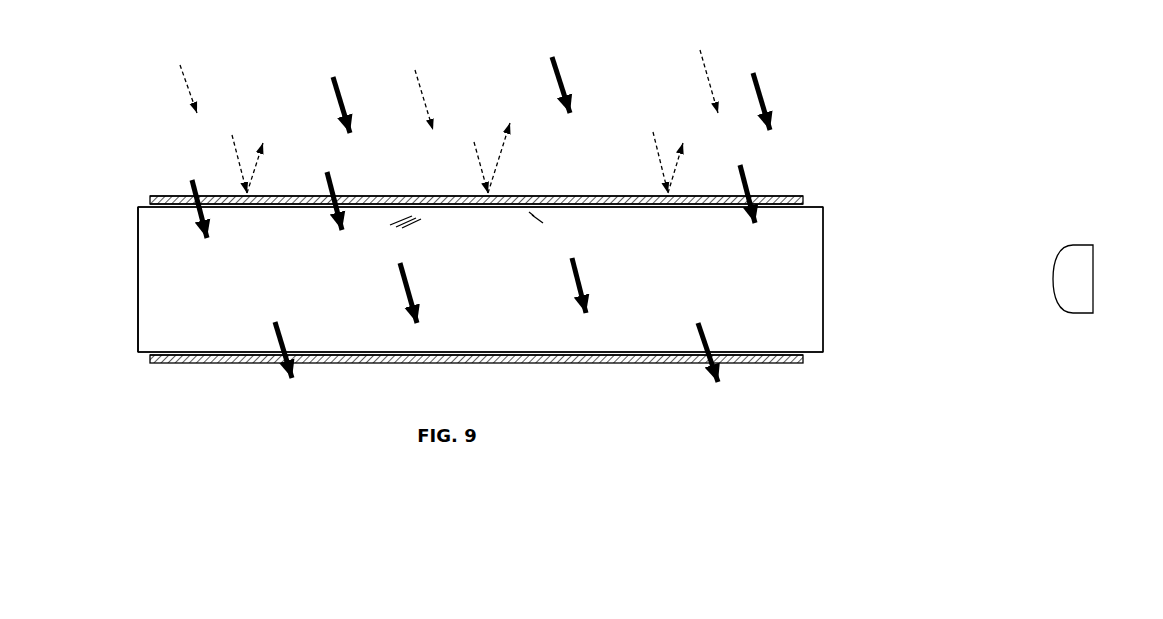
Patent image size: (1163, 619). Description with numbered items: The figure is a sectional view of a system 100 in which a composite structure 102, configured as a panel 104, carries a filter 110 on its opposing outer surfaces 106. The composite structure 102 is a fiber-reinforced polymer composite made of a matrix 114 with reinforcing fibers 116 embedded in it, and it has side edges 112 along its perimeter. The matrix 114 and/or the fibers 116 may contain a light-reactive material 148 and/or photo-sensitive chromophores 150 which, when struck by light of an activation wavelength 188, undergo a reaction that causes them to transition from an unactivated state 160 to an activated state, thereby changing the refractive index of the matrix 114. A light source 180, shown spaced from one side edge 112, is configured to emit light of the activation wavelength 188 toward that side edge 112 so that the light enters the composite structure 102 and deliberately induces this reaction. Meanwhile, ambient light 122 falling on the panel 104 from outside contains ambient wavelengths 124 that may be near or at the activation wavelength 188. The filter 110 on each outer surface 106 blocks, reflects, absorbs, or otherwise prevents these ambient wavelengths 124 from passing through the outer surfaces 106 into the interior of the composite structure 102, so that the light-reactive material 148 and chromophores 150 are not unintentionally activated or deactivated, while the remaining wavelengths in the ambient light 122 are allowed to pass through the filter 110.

The system 100 is at (965, 160).
The composite structure 102 is at (134, 222).
The panel 104 is at (134, 315).
The outer surfaces 106 is at (150, 201).
The filter 110 is at (210, 196).
The side edges 112 is at (138, 240).
The matrix 114 is at (535, 215).
The reinforcing fibers 116 is at (134, 275).
The ambient light 122 is at (832, 85).
The ambient wavelengths 124 is at (552, 60).
The light-reactive material 148 is at (393, 217).
The chromophores 150 is at (400, 215).
The unactivated state 160 is at (405, 212).
The light source 180 is at (1093, 265).
The activation wavelength 188 is at (178, 66).